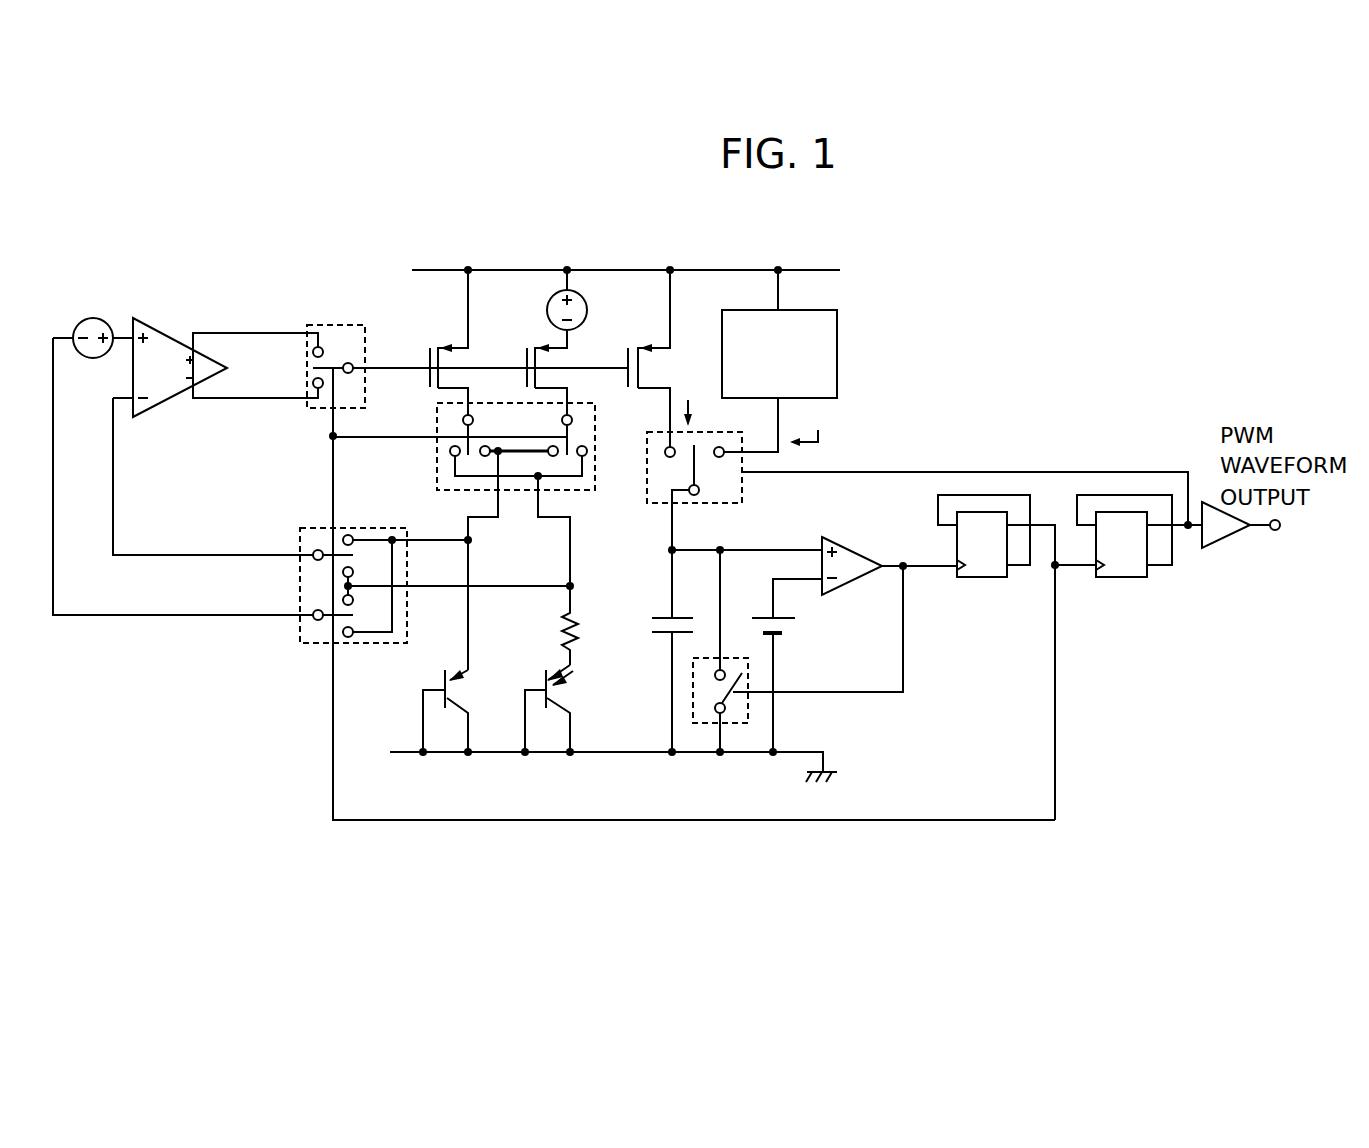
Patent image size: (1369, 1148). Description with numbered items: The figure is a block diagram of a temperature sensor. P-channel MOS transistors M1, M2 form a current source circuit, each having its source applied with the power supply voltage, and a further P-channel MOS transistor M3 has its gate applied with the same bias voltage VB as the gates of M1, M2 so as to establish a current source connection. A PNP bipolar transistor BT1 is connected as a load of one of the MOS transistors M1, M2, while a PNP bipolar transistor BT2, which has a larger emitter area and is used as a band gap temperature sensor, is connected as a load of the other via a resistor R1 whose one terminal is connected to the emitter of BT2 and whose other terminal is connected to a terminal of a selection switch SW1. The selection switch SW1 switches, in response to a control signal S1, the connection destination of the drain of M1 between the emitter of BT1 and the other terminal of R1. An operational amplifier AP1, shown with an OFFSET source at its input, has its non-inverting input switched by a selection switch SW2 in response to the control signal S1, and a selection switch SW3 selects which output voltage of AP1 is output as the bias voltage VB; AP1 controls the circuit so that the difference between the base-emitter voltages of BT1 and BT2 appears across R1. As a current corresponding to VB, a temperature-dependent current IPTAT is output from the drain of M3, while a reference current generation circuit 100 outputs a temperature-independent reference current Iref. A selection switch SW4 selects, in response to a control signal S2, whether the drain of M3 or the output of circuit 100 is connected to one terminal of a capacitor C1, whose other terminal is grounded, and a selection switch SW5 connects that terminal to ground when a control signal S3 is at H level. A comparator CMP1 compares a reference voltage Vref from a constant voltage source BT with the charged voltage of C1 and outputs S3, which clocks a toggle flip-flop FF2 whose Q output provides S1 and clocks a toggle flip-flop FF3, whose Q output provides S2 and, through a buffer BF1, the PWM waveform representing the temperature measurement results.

The operational amplifier AP1 is at (168, 330).
The offset voltage source OFFSET is at (100, 320).
The selection switch SW1 is at (437, 466).
The selection switch SW2 is at (300, 632).
The selection switch SW3 is at (320, 410).
The selection switch SW4 is at (648, 478).
The selection switch SW5 is at (750, 710).
The P-channel MOS transistor M1 is at (430, 348).
The P-channel MOS transistor M2 is at (530, 348).
The P-channel MOS transistor M3 is at (628, 388).
The bias voltage VB is at (490, 353).
The bipolar transistor BT1 is at (438, 683).
The bipolar transistor BT2 is at (542, 680).
The resistor R1 is at (586, 625).
The capacitor C1 is at (652, 628).
The reference current generation circuit 100 is at (837, 355).
The temperature-dependent current IPTAT is at (720, 416).
The reference current Iref is at (815, 427).
The comparator CMP1 is at (877, 521).
The constant voltage source BT is at (791, 612).
The reference voltage Vref is at (810, 640).
The flip-flop FF2 is at (990, 578).
The flip-flop FF3 is at (1123, 578).
The buffer BF1 is at (1223, 542).
The control signal S1 is at (951, 837).
The control signal S2 is at (965, 486).
The control signal S3 is at (818, 629).